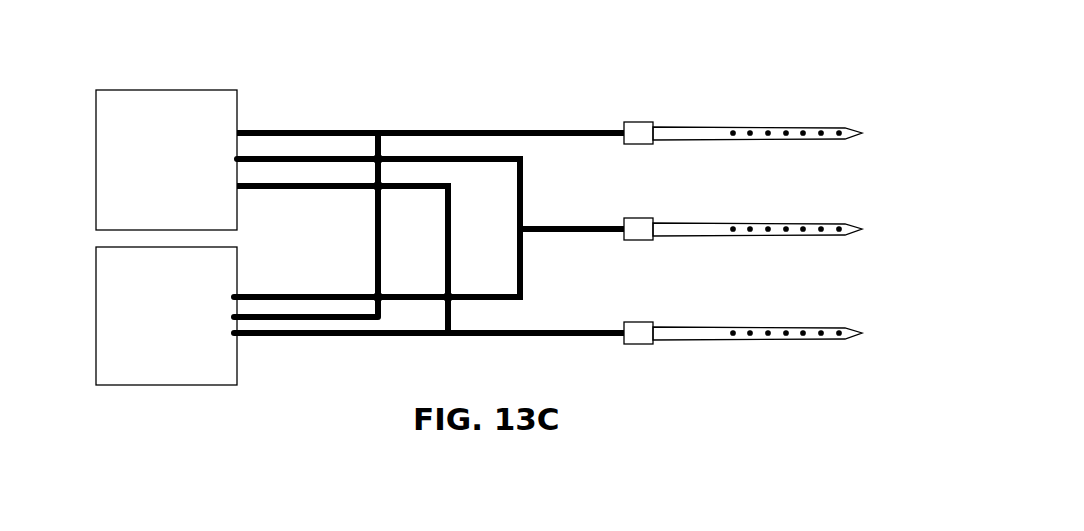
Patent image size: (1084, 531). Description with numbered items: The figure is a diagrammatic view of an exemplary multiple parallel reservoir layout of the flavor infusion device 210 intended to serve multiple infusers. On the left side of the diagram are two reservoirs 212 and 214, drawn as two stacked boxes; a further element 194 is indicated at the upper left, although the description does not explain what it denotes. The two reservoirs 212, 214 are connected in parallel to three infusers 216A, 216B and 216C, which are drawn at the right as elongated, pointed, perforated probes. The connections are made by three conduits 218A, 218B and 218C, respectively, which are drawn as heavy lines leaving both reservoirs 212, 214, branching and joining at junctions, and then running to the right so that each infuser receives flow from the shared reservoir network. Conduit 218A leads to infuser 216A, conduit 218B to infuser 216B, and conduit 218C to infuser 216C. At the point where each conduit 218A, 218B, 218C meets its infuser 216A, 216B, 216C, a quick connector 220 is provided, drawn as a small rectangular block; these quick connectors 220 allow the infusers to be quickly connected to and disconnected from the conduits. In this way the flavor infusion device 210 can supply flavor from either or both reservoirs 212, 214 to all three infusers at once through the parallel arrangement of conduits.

The connection to controller 194 is at (140, 0).
The flavor infusion device 210 is at (800, 82).
The reservoir 212 is at (200, 90).
The reservoir 214 is at (168, 385).
The infuser 216A is at (692, 127).
The infuser 216B is at (695, 223).
The infuser 216C is at (680, 327).
The conduit 218A is at (482, 130).
The conduit 218B is at (533, 229).
The conduit 218C is at (533, 333).
The quick connector 220 is at (630, 122).